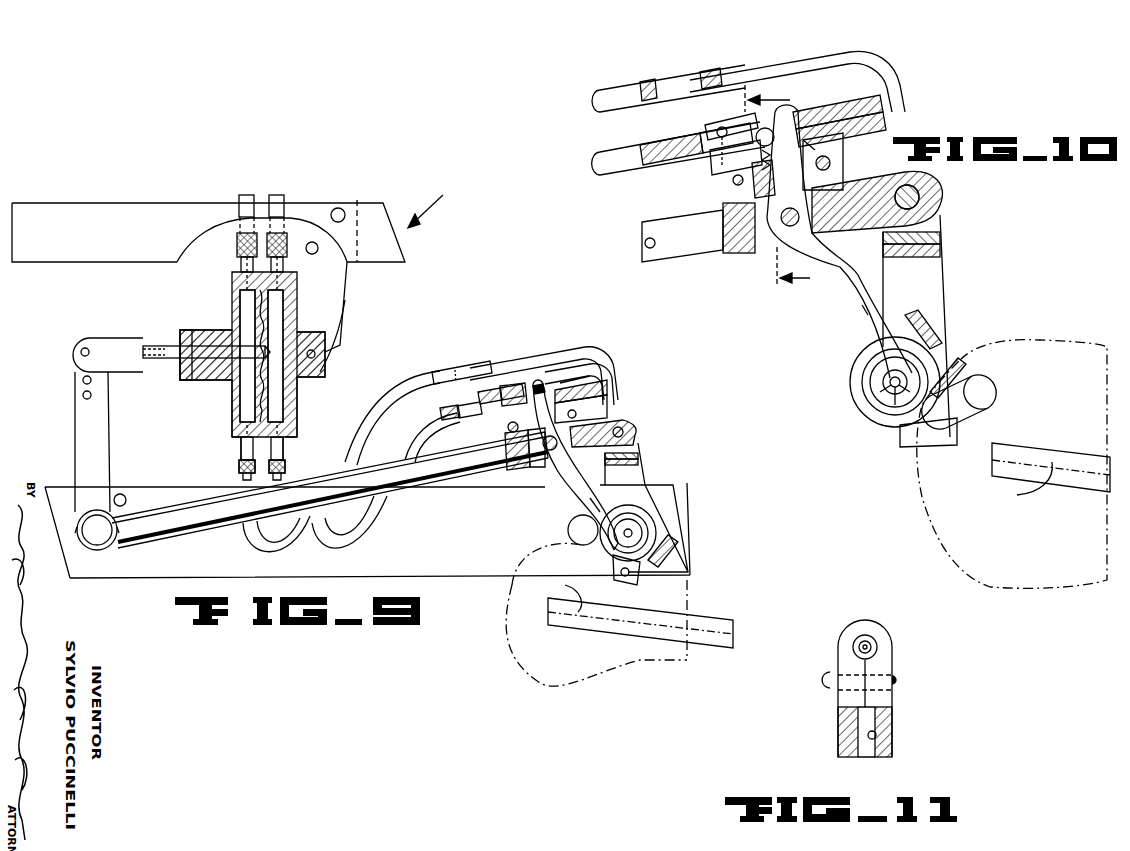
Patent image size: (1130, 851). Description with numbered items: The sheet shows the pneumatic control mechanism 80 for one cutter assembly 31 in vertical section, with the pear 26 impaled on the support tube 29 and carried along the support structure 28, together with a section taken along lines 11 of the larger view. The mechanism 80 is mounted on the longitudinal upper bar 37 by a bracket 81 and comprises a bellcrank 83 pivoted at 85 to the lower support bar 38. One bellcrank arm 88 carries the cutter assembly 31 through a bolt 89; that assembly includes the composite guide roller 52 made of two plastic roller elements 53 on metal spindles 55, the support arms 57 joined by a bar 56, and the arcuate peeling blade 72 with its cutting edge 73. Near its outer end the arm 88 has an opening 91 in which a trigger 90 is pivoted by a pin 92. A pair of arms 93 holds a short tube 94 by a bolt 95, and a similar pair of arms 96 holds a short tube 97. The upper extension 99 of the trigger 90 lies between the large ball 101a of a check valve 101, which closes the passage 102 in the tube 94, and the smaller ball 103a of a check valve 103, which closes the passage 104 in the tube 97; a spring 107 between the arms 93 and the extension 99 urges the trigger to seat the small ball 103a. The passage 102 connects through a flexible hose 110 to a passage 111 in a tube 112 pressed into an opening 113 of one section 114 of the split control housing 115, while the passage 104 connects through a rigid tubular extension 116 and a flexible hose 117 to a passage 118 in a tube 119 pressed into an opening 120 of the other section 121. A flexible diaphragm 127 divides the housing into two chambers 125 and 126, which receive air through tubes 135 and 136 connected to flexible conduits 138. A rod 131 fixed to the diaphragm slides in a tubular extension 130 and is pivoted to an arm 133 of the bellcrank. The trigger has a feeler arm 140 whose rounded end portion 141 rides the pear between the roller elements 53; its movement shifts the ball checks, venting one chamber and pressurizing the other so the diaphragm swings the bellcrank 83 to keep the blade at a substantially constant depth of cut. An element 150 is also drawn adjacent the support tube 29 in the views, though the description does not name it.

In FIG. 10, the section lines 11— 11 is at (779, 192).
In FIG. 9, the fruit 26 is at (510, 655).
In FIG. 10, the fruit 26 is at (1030, 325).
In FIG. 9, the support structure 28 is at (436, 201).
In FIG. 9, the support rod or tube 29 is at (715, 610).
In FIG. 10, the support rod or tube 29 is at (1053, 450).
In FIG. 9, the cutter assembly 31 is at (647, 443).
In FIG. 10, the cutter assembly 31 is at (947, 202).
In FIG. 9, the longitudinal upper bar 37 is at (208, 231).
In FIG. 9, the lower support bar 38 is at (367, 530).
In FIG. 9, the composite concave guide roller 52 is at (657, 513).
In FIG. 10, the composite concave guide roller 52 is at (851, 375).
In FIG. 10, the plastic roller element 53 is at (870, 412).
In FIG. 9, the metal spindle 55 is at (640, 530).
In FIG. 10, the metal spindle 55 is at (875, 392).
In FIG. 9, the bar 56 is at (660, 553).
In FIG. 10, the bar 56 is at (923, 327).
In FIG. 10, the support arm 57 is at (950, 360).
In FIG. 10, the peeling blade 72 is at (965, 385).
In FIG. 10, the cutting edge 73 is at (932, 442).
In FIG. 9, the pneumatic control mechanism 80 is at (225, 290).
In FIG. 9, the bracket 81 is at (345, 288).
In FIG. 9, the bellcrank 83 is at (65, 462).
In FIG. 9, the pivot 85 is at (108, 540).
In FIG. 9, the bellcrank arm 88 is at (228, 500).
In FIG. 10, the bellcrank arm 88 is at (655, 240).
In FIG. 11, the bellcrank arm 88 is at (885, 718).
In FIG. 9, the bolt 89 is at (627, 425).
In FIG. 10, the bolt 89 is at (918, 195).
In FIG. 9, the trigger 90 is at (600, 483).
In FIG. 10, the trigger 90 is at (860, 332).
In FIG. 9, the opening 91 is at (541, 457).
In FIG. 10, the opening 91 is at (760, 255).
In FIG. 11, the opening 91 is at (875, 735).
In FIG. 9, the pin 92 is at (550, 455).
In FIG. 10, the pin 92 is at (813, 237).
In FIG. 9, the arms 93 is at (500, 396).
In FIG. 10, the arms 93 is at (722, 170).
In FIG. 11, the arms 93 is at (845, 632).
In FIG. 9, the short tube 94 is at (457, 411).
In FIG. 10, the short tube 94 is at (705, 130).
In FIG. 11, the short tube 94 is at (878, 642).
In FIG. 9, the bolt 95 is at (508, 430).
In FIG. 10, the bolt 95 is at (733, 183).
In FIG. 11, the bolt 95 is at (896, 680).
In FIG. 9, the arms 96 is at (600, 404).
In FIG. 10, the arms 96 is at (838, 180).
In FIG. 9, the short tube 97 is at (610, 384).
In FIG. 10, the short tube 97 is at (880, 104).
In FIG. 9, the upper extension 99 is at (538, 380).
In FIG. 10, the upper extension 99 is at (765, 128).
In FIG. 9, the check valve 101 is at (498, 380).
In FIG. 10, the check valve 101 is at (672, 162).
In FIG. 9, the large ball 101a is at (528, 382).
In FIG. 10, the large ball 101a is at (740, 148).
In FIG. 10, the passage 102 is at (718, 128).
In FIG. 11, the passage 102 is at (858, 648).
In FIG. 9, the check valve 103 is at (598, 362).
In FIG. 10, the check valve 103 is at (840, 152).
In FIG. 9, the small ball 103a is at (572, 372).
In FIG. 10, the small ball 103a is at (824, 149).
In FIG. 10, the passage 104 is at (885, 120).
In FIG. 9, the spring 107 is at (513, 458).
In FIG. 10, the spring 107 is at (750, 195).
In FIG. 9, the flexible hose 110 is at (368, 504).
In FIG. 10, the flexible hose 110 is at (622, 168).
In FIG. 9, the passage 111 is at (287, 465).
In FIG. 9, the tube 112 is at (286, 447).
In FIG. 9, the opening 113 is at (285, 428).
In FIG. 9, the housing section 114 is at (290, 410).
In FIG. 9, the split air-tight control housing 115 is at (335, 352).
In FIG. 9, the rigid tubular extension 116 is at (605, 365).
In FIG. 10, the rigid tubular extension 116 is at (875, 70).
In FIG. 9, the flexible hose 117 is at (430, 378).
In FIG. 10, the flexible hose 117 is at (625, 108).
In FIG. 9, the passage 118 is at (239, 460).
In FIG. 9, the tube 119 is at (240, 445).
In FIG. 9, the opening 120 is at (240, 430).
In FIG. 9, the housing section 121 is at (236, 405).
In FIG. 9, the chamber 125 is at (243, 300).
In FIG. 9, the chamber 126 is at (278, 306).
In FIG. 9, the flexible diaphragm 127 is at (258, 318).
In FIG. 9, the tubular extension 130 is at (222, 372).
In FIG. 9, the rod 131 is at (165, 346).
In FIG. 9, the arm 133 is at (110, 428).
In FIG. 9, the tube 135 is at (238, 262).
In FIG. 9, the tube 136 is at (285, 262).
In FIG. 9, the flexible conduits 138 is at (282, 196).
In FIG. 9, the feeler arm 140 is at (592, 500).
In FIG. 10, the feeler arm 140 is at (863, 311).
In FIG. 9, the pear-contacting end portion 141 is at (617, 547).
In FIG. 10, the pear-contacting end portion 141 is at (883, 381).
In FIG. 9, the slot 150 is at (558, 592).
In FIG. 10, the slot 150 is at (1017, 483).